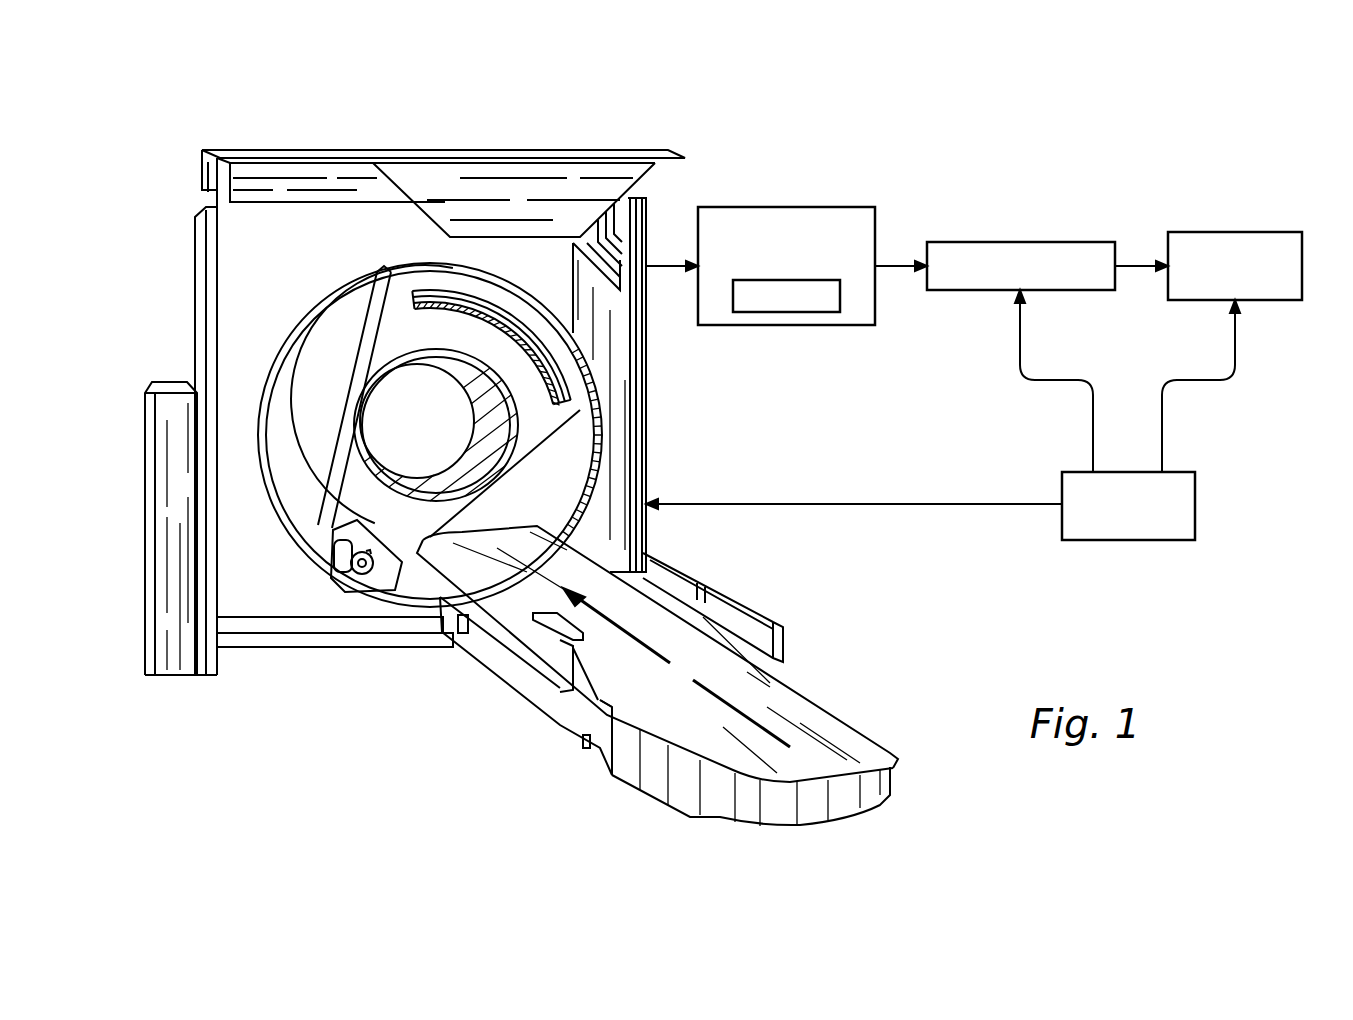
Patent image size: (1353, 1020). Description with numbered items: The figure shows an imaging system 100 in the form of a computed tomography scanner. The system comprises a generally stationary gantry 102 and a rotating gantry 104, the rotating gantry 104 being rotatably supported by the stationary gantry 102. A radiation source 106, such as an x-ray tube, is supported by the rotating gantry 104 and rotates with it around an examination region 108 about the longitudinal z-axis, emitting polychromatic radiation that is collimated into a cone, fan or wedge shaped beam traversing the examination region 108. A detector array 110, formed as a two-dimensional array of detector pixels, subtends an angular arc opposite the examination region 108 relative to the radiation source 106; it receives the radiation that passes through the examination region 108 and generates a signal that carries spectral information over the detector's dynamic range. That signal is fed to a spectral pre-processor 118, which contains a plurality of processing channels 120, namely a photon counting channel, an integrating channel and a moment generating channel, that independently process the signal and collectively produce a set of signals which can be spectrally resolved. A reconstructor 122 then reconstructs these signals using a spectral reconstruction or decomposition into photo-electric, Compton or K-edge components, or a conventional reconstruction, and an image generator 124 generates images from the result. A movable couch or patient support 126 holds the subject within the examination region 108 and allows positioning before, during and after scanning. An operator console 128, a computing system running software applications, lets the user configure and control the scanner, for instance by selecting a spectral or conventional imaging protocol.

The imaging system 100 is at (168, 133).
The generally stationary gantry 102 is at (197, 290).
The rotating gantry 104 is at (393, 320).
The radiation source 106 is at (356, 575).
The examination region 108 is at (430, 426).
The detector array 110 is at (553, 378).
The spectral pre-processor 118 is at (800, 207).
The processing channels 120 is at (778, 312).
The reconstructor 122 is at (1027, 242).
The image generator 124 is at (1238, 232).
The patient support 126 is at (840, 743).
The operator console 128 is at (1195, 503).